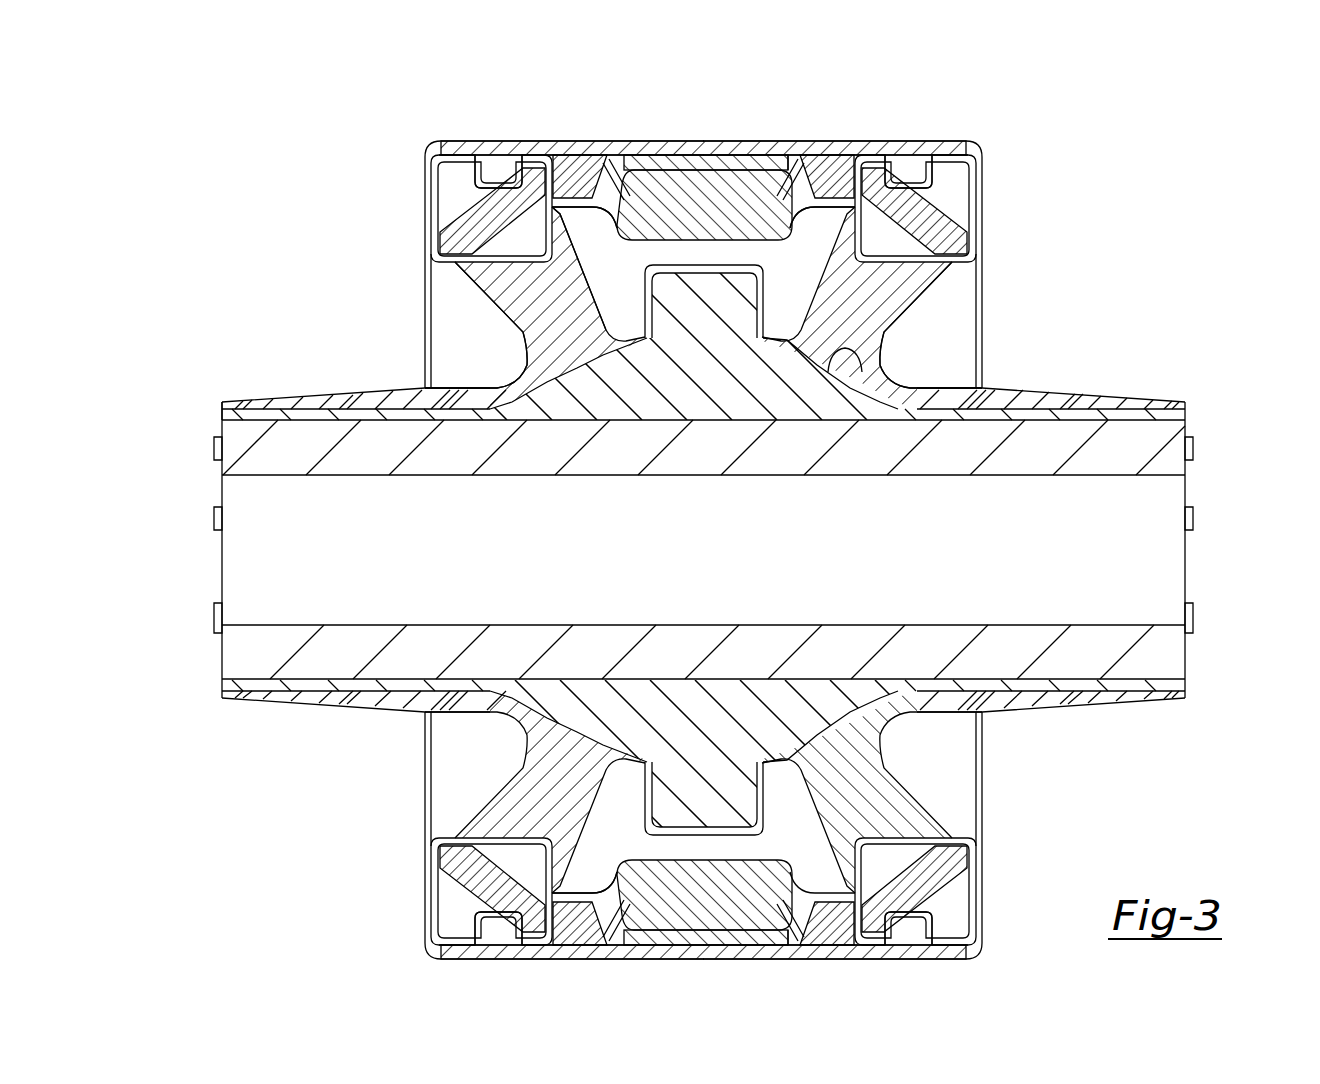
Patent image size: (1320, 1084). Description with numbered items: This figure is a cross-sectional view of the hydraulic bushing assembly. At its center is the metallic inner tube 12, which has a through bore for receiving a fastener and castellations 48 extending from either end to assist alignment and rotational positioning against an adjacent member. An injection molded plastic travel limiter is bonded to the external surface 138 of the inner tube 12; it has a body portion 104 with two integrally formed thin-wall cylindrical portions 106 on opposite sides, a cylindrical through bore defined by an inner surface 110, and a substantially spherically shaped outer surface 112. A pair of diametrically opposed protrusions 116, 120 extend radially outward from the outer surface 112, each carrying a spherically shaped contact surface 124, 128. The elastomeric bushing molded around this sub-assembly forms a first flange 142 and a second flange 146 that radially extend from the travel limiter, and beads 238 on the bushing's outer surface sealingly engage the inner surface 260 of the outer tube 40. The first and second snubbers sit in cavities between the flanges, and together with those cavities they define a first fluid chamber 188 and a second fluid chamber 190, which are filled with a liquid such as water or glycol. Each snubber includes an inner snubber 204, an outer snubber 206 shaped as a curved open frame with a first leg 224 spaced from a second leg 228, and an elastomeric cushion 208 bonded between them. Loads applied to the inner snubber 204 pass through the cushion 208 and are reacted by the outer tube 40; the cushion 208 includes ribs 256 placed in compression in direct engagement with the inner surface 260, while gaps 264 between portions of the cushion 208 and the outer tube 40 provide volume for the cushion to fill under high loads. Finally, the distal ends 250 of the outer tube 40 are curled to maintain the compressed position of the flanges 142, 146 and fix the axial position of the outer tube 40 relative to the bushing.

The inner tube 12 is at (1140, 443).
The outer tube 40 is at (952, 125).
The castellations 48 is at (1195, 625).
The body portion 104 is at (580, 385).
The thin-wall cylindrical portions 106 is at (298, 408).
The inner surface 110 is at (310, 432).
The outer surface 112 is at (845, 352).
The protrusion 116 is at (675, 300).
The protrusion 120 is at (680, 803).
The contact surface 124 is at (742, 265).
The contact surface 128 is at (745, 835).
The external surface 138 is at (1135, 410).
The first flange 142 is at (490, 290).
The second flange 146 is at (905, 290).
The first fluid chamber 188 is at (600, 247).
The second fluid chamber 190 is at (613, 844).
The inner snubber 204 is at (860, 205).
The outer snubber 206 is at (561, 150).
The cushion 208 is at (701, 182).
The first leg 224 is at (575, 150).
The second leg 228 is at (810, 160).
The beads 238 is at (493, 152).
The distal ends 250 is at (428, 152).
The ribs 256 is at (648, 165).
The inner surface 260 is at (845, 148).
The gaps 264 is at (625, 168).